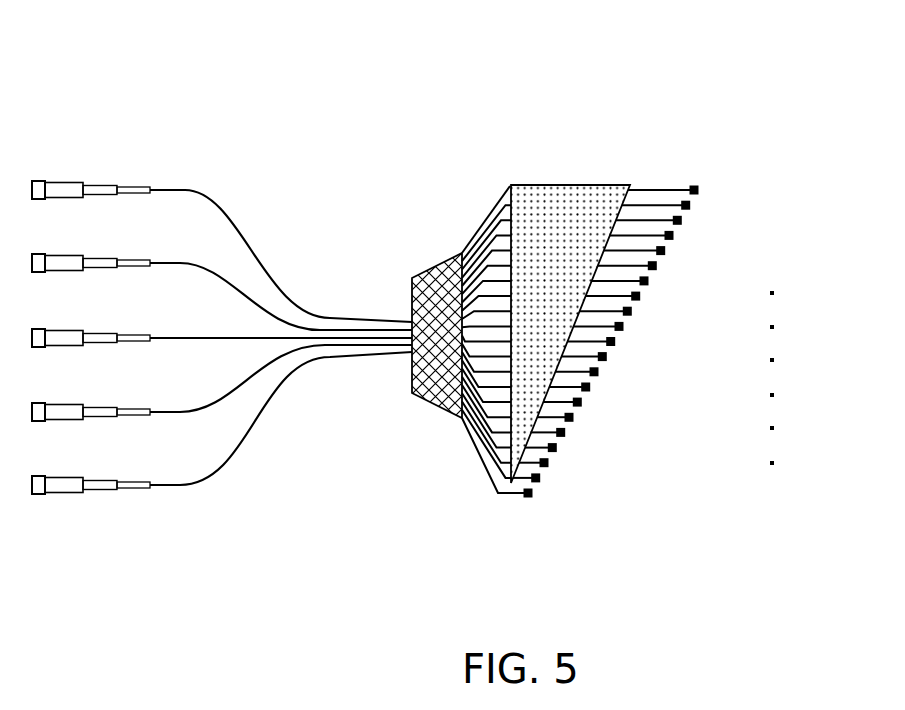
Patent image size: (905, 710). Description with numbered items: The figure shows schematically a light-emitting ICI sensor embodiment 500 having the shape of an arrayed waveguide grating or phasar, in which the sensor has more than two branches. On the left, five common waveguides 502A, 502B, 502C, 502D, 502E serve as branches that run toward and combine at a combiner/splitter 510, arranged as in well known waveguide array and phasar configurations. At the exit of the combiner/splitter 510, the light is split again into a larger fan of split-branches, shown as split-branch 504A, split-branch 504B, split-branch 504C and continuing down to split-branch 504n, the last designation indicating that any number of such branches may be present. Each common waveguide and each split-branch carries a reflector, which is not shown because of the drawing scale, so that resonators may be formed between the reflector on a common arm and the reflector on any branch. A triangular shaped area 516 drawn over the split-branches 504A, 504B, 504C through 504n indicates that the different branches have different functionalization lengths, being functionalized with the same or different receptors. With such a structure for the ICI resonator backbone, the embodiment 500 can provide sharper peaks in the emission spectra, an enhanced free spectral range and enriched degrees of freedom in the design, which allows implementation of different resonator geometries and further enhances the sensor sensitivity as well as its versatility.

The light-emitting ICI sensor embodiment 500 is at (318, 57).
The common waveguide 502A is at (62, 182).
The common waveguide 502B is at (62, 256).
The common waveguide 502C is at (62, 330).
The common waveguide 502D is at (62, 405).
The common waveguide 502E is at (62, 478).
The combiner/splitter 510 is at (433, 410).
The triangular shaped area 516 is at (550, 185).
The split-branch 504A is at (692, 184).
The split-branch 504B is at (689, 205).
The split-branch 504C is at (680, 221).
The split-branch 504n is at (534, 494).